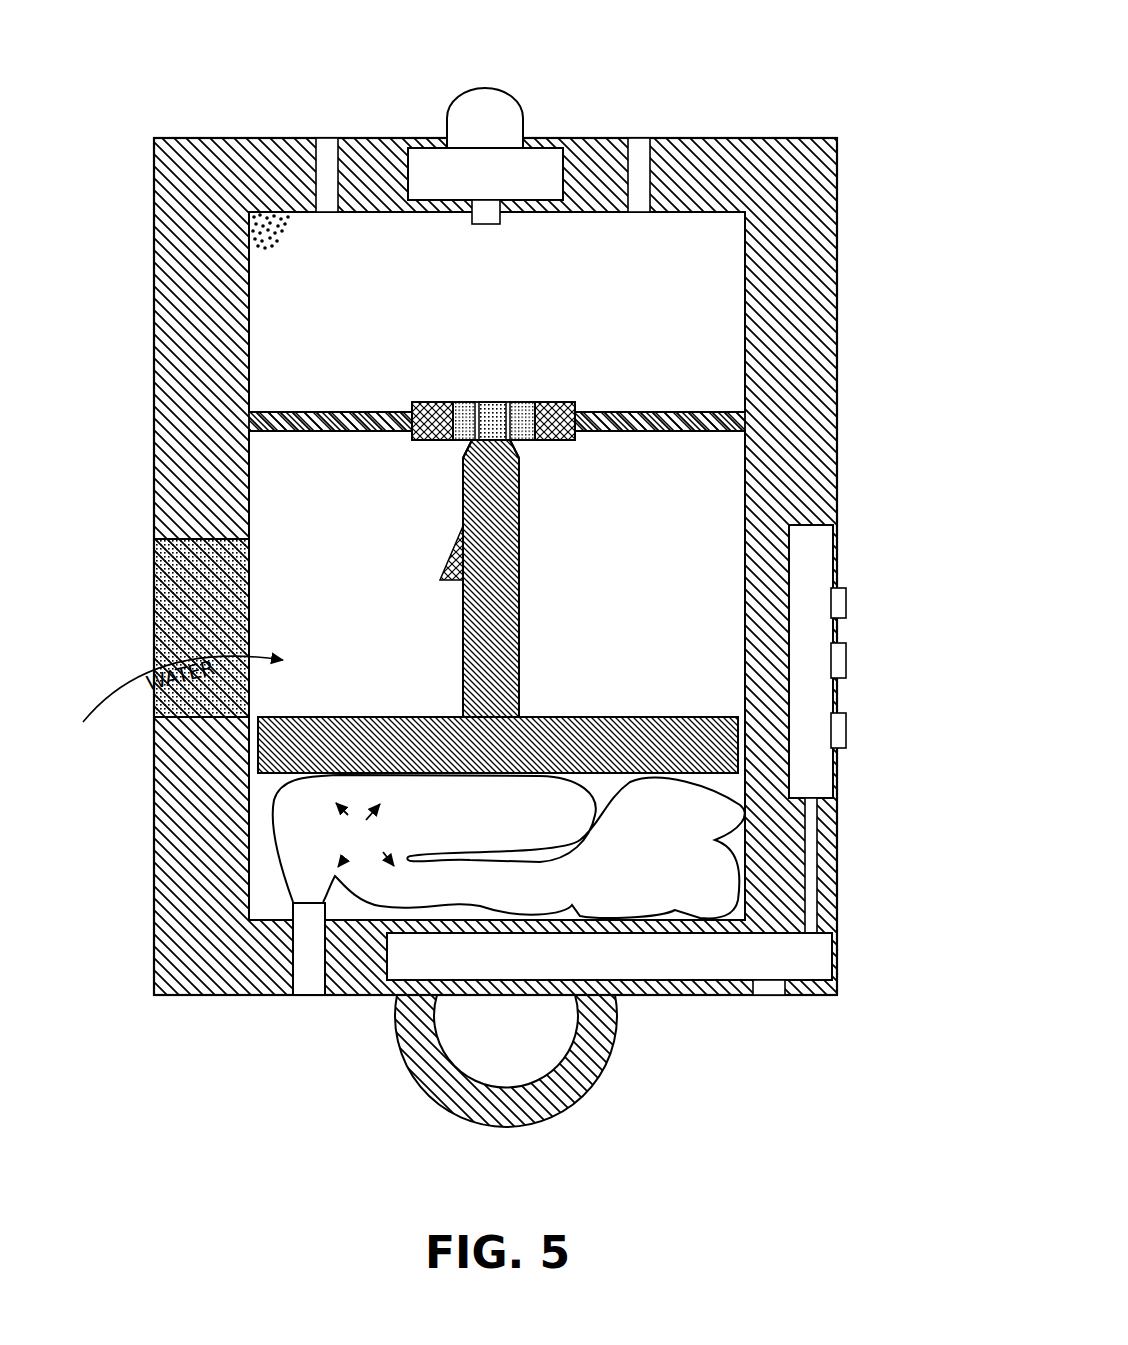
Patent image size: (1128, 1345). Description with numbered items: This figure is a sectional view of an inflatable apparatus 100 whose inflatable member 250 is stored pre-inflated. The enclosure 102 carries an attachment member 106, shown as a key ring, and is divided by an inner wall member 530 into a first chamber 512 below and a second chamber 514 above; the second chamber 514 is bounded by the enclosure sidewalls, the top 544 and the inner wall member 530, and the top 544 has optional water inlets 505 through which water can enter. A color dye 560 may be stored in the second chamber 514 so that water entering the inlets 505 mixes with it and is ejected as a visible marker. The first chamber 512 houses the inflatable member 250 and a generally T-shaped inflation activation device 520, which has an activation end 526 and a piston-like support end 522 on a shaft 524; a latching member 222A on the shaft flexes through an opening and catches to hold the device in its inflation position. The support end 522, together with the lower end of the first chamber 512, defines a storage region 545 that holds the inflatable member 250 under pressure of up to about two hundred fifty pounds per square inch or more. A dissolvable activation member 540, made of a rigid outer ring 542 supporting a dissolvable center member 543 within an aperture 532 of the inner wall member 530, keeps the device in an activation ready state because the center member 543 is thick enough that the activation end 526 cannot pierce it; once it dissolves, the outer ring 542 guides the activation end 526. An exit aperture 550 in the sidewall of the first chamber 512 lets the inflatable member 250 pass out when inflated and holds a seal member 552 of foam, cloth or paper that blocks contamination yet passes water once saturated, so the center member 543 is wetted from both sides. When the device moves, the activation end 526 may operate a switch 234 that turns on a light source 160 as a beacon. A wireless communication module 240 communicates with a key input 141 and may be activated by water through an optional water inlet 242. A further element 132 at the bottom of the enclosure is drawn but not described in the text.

The inflatable apparatus 100 is at (752, 26).
The enclosure 102 is at (837, 522).
The attachment member 106 is at (588, 1052).
The discharge nozzle 132 is at (302, 996).
The key input 141 is at (836, 712).
The light source 160 is at (505, 90).
The latching member 222A is at (453, 570).
The switch 234 is at (487, 224).
The wireless communication module 240 is at (609, 956).
The water inlet 242 is at (770, 997).
The inflatable member 250 is at (509, 846).
The water inlets 505 is at (326, 138).
The first chamber 512 is at (497, 675).
The second chamber 514 is at (497, 312).
The inflation activation device 520 is at (452, 655).
The support end 522 is at (682, 713).
The shaft 524 is at (522, 578).
The activation end 526 is at (528, 455).
The inner wall member 530 is at (368, 405).
The aperture 532 is at (578, 410).
The dissolvable activation member 540 is at (506, 382).
The outer ring 542 is at (552, 400).
The dissolvable center member 543 is at (497, 398).
The top 544 is at (364, 138).
The storage region 545 is at (265, 885).
The exit aperture 550 is at (150, 538).
The seal member 552 is at (168, 614).
The color dye 560 is at (288, 226).